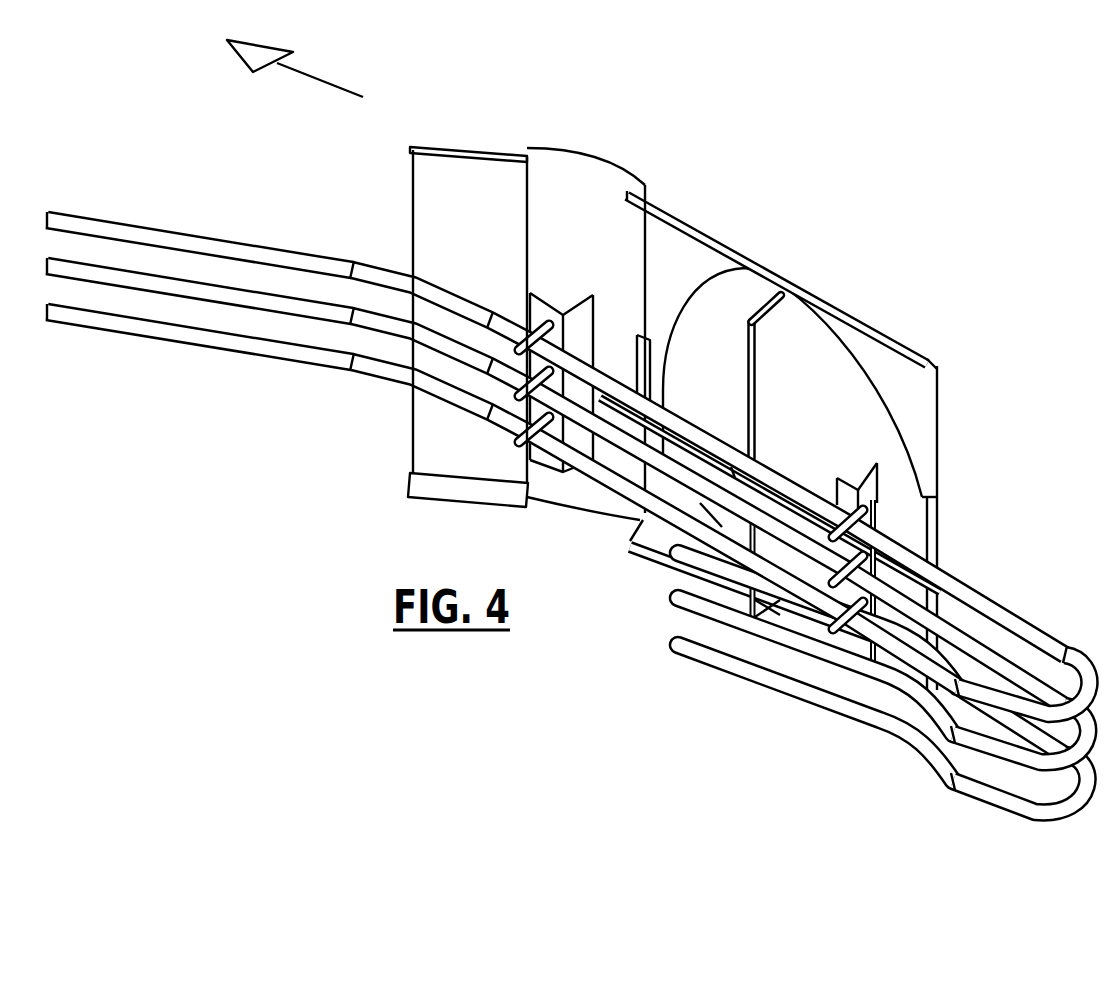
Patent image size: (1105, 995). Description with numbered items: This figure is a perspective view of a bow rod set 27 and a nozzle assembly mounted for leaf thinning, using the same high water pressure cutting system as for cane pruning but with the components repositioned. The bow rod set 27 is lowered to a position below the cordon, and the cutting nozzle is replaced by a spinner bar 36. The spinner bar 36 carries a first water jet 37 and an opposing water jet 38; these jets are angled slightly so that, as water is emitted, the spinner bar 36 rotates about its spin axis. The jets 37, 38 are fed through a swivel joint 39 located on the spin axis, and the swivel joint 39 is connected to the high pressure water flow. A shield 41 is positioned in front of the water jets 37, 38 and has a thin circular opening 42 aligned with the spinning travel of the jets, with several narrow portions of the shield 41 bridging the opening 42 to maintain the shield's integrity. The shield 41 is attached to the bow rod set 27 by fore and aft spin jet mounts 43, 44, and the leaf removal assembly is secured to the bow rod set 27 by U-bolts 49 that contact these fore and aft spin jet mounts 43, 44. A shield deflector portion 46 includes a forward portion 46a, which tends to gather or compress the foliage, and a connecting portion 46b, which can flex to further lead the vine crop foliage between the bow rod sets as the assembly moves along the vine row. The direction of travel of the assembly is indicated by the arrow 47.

The bow rod set 27 is at (1024, 597).
The spinner bar 36 is at (747, 387).
The first water jet 37 is at (773, 307).
The opposing water jet 38 is at (780, 617).
The swivel joint 39 is at (735, 472).
The shield 41 is at (678, 210).
The opening 42 is at (733, 262).
The fore spin jet mount 43 is at (605, 368).
The aft spin jet mount 44 is at (918, 528).
The shield deflector portion 46 is at (413, 182).
The forward portion 46a is at (433, 146).
The connecting portion 46b is at (575, 162).
The arrow 47 is at (327, 78).
The U-bolts 49 is at (522, 441).